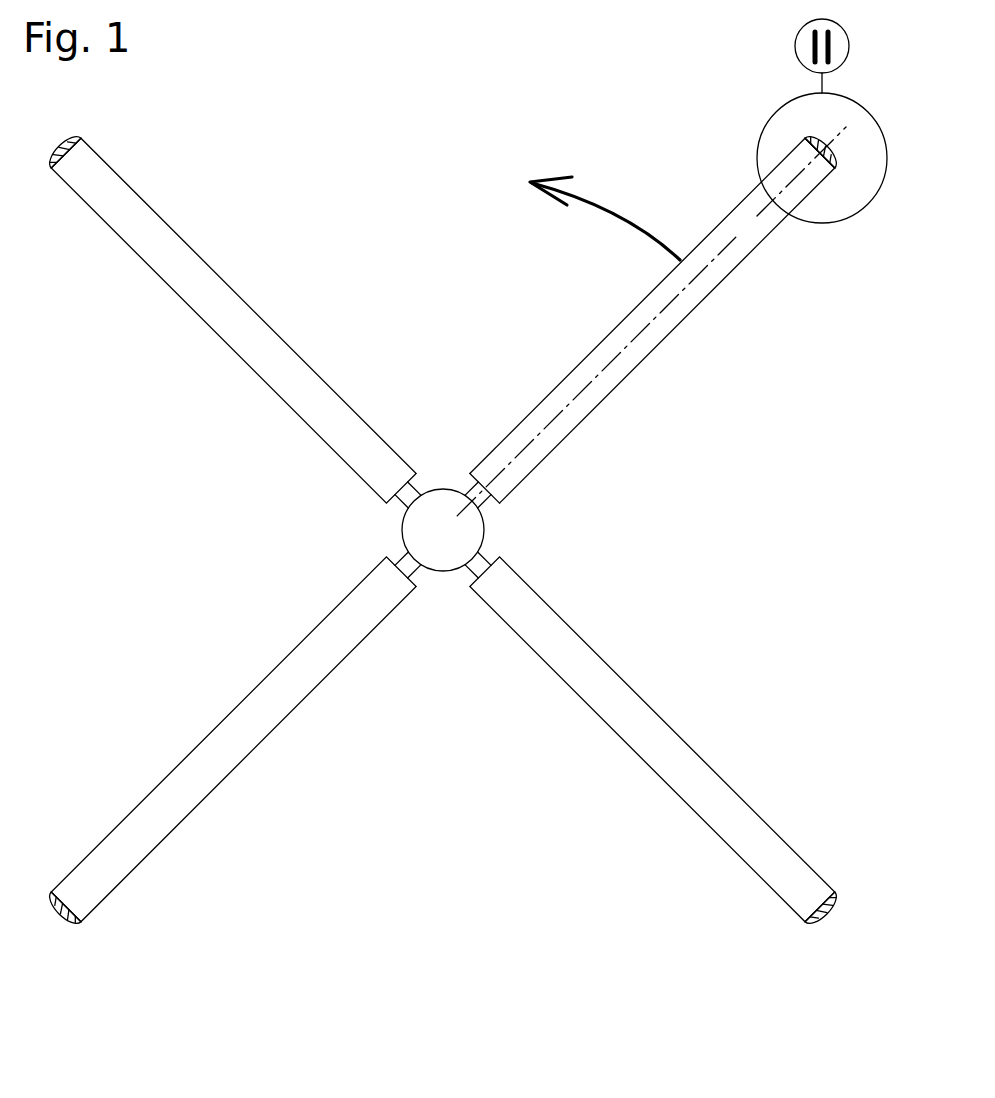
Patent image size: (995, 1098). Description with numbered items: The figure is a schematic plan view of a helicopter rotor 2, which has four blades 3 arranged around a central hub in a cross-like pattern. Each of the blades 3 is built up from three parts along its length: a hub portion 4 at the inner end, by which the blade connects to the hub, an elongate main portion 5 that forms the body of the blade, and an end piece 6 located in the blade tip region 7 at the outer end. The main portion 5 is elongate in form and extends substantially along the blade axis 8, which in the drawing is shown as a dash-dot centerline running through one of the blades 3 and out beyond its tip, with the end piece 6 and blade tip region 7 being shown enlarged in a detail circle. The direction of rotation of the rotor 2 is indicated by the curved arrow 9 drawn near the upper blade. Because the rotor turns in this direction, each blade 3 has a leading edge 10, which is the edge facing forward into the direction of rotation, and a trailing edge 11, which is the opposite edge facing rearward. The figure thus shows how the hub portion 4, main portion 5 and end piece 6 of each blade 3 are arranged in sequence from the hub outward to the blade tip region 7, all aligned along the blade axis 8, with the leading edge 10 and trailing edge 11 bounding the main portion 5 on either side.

The rotor 2 is at (465, 474).
The blades 3 is at (128, 241).
The hub portion 4 is at (487, 503).
The main portion 5 is at (665, 289).
The end piece 6 is at (804, 134).
The blade tip region 7 is at (845, 184).
The blade axis 8 is at (650, 323).
The arrow 9 is at (593, 210).
The leading edge 10 is at (562, 381).
The trailing edge 11 is at (593, 411).